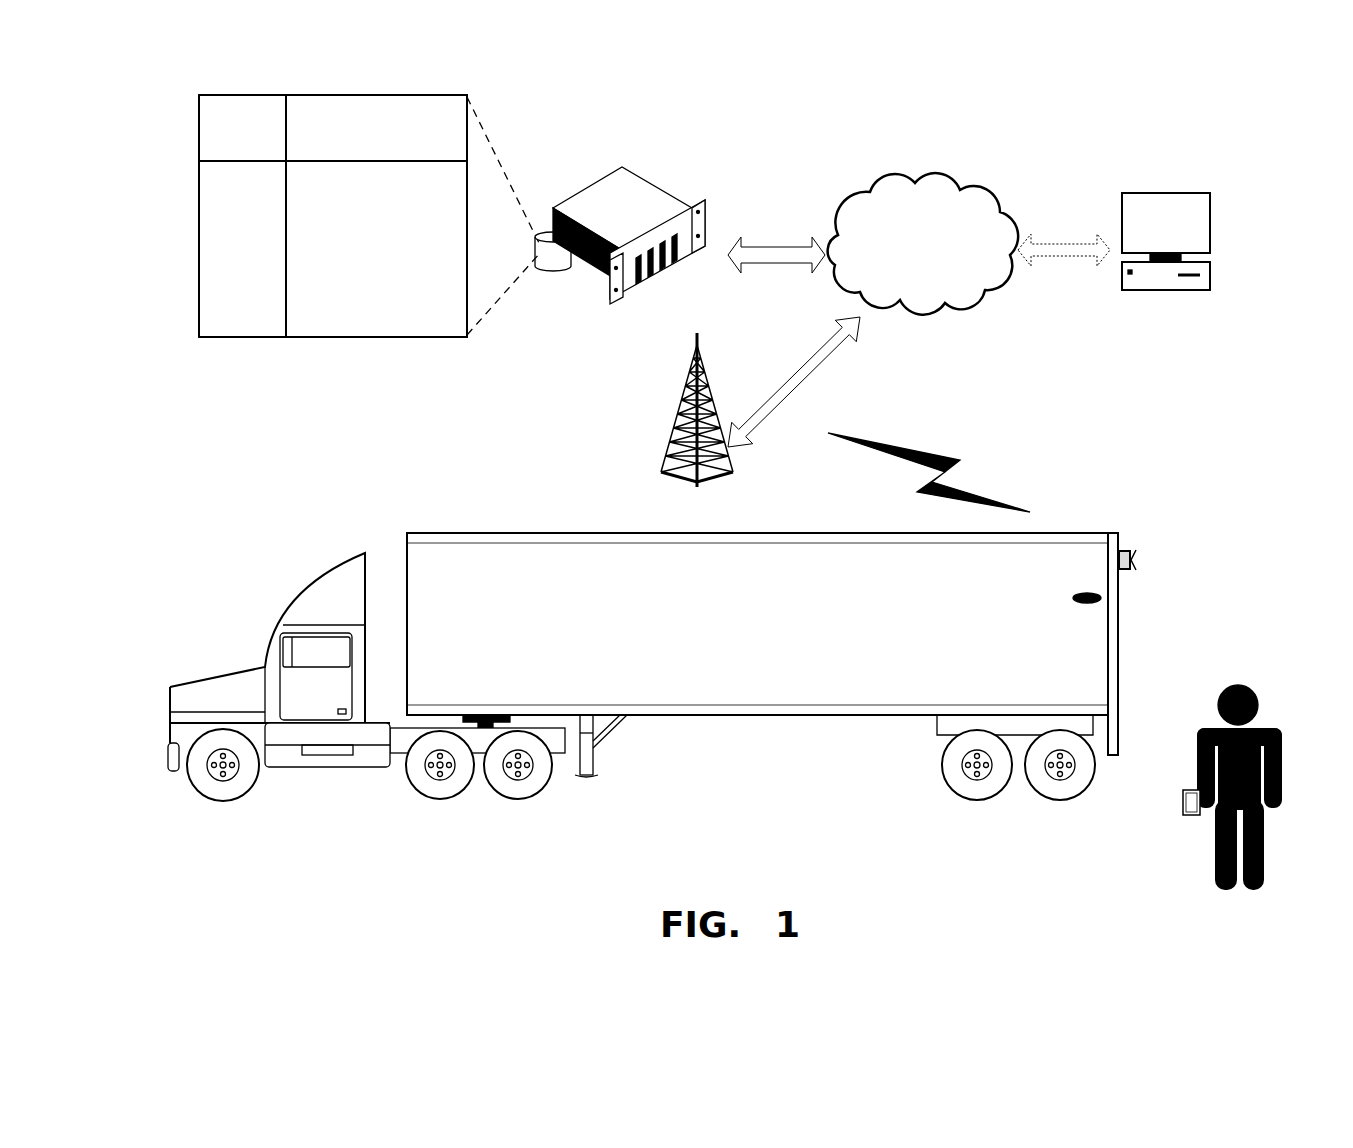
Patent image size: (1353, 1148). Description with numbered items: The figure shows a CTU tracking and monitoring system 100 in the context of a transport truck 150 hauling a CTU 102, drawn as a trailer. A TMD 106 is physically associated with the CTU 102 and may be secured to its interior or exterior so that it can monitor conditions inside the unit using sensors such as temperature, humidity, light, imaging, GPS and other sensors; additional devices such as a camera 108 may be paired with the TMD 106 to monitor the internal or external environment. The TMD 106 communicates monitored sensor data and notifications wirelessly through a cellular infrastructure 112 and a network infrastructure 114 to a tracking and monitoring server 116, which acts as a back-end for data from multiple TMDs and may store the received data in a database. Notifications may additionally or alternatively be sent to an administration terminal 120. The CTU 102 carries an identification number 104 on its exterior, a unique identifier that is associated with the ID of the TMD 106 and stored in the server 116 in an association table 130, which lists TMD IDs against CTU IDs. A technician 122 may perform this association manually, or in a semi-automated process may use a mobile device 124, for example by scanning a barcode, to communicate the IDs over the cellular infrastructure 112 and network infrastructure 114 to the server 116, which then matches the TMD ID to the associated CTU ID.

The CTU tracking and monitoring system 100 is at (979, 102).
The association table 130 is at (199, 97).
The tracking and monitoring server 116 is at (638, 222).
The network infrastructure 114 is at (901, 281).
The administration terminal 120 is at (1146, 234).
The cellular infrastructure 112 is at (690, 400).
The CTU 102 is at (822, 627).
The identification number 104 is at (1062, 548).
The camera 108 is at (1137, 560).
The TMD 106 is at (1102, 598).
The transport truck 150 is at (333, 563).
The technician 122 is at (1222, 892).
The mobile device 124 is at (1193, 816).